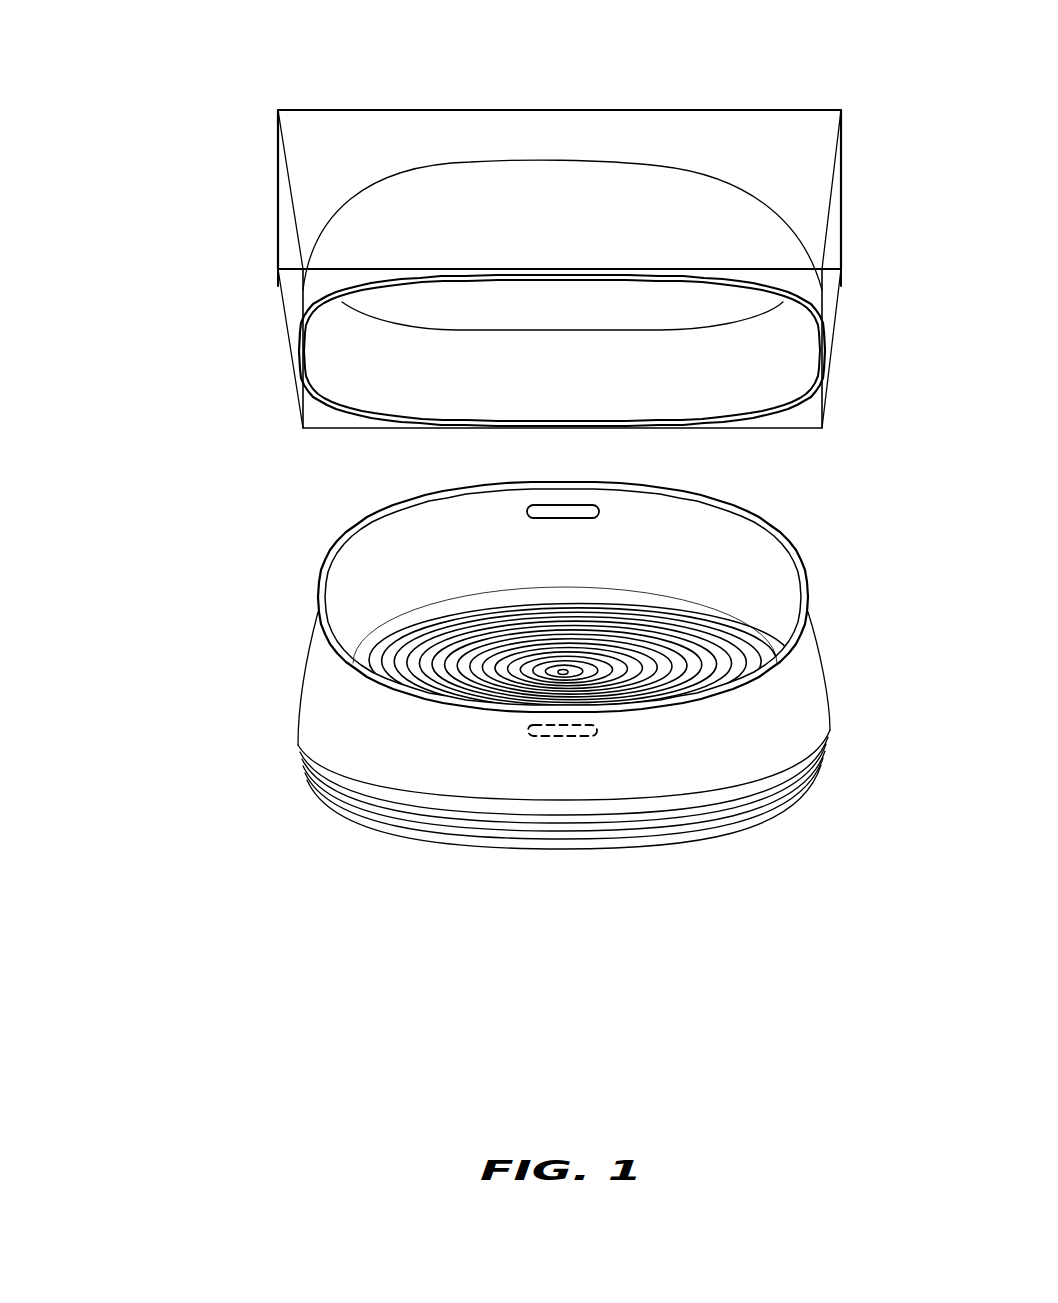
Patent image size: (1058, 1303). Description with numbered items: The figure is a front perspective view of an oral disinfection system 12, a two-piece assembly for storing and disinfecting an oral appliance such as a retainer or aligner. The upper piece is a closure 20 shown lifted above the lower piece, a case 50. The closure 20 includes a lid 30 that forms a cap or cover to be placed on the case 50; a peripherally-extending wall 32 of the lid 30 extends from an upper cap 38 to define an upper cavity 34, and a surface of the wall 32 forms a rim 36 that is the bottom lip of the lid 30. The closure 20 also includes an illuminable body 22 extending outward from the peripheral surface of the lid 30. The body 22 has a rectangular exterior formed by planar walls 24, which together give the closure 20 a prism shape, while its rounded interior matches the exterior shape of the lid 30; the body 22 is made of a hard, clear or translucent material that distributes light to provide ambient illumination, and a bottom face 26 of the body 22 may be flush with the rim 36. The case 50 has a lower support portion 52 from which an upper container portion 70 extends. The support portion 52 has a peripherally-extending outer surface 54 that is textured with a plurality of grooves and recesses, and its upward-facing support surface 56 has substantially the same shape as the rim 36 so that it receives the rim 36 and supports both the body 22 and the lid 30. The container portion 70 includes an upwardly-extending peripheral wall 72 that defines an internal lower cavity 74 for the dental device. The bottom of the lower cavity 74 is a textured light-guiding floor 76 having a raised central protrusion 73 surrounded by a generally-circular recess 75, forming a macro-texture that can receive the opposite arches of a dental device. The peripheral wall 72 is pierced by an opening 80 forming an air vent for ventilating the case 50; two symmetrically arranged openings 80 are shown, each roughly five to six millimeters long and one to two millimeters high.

The oral disinfection system 12 is at (112, 95).
The closure 20 is at (210, 177).
The body 22 is at (797, 165).
The walls 24 is at (833, 296).
The bottom face 26 is at (288, 288).
The lid 30 is at (430, 185).
The peripherally-extending wall 32 is at (632, 175).
The upper cavity 34 is at (757, 378).
The rim 36 is at (300, 360).
The upper cap 38 is at (577, 315).
The case 50 is at (200, 650).
The lower support portion 52 is at (358, 830).
The peripherally-extending outer surface 54 is at (302, 785).
The support surface 56 is at (298, 690).
The upper container portion 70 is at (785, 755).
The peripheral wall 72 is at (790, 697).
The central protrusion 73 is at (565, 672).
The lower cavity 74 is at (775, 578).
The generally-circular recess 75 is at (488, 670).
The light-guiding floor 76 is at (757, 642).
The opening 80 is at (557, 512).